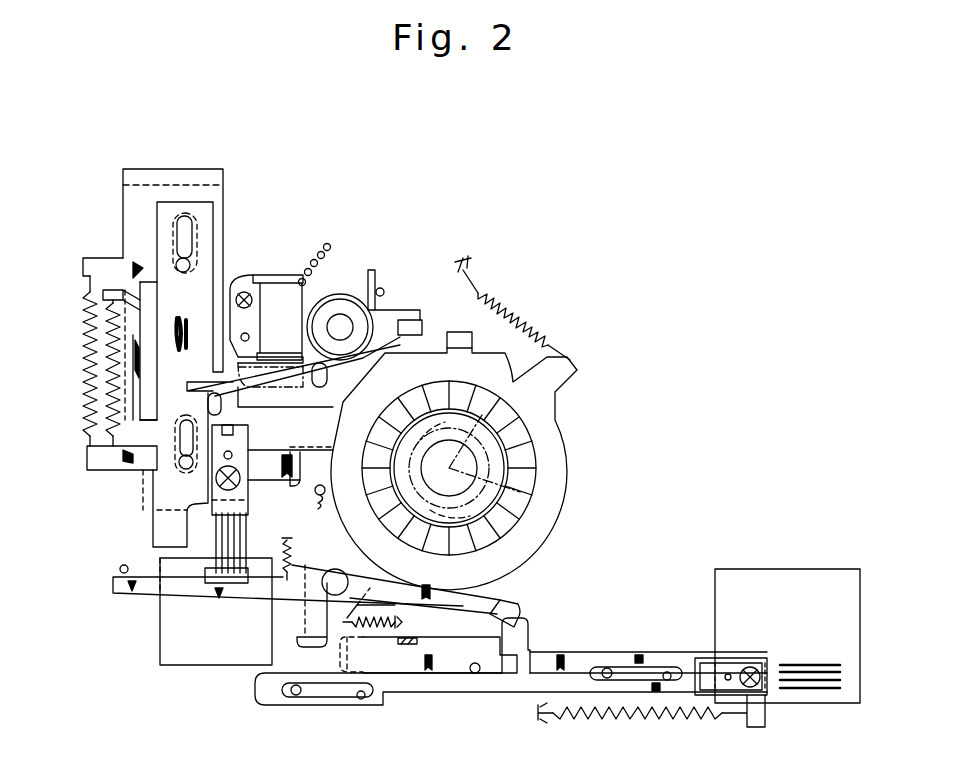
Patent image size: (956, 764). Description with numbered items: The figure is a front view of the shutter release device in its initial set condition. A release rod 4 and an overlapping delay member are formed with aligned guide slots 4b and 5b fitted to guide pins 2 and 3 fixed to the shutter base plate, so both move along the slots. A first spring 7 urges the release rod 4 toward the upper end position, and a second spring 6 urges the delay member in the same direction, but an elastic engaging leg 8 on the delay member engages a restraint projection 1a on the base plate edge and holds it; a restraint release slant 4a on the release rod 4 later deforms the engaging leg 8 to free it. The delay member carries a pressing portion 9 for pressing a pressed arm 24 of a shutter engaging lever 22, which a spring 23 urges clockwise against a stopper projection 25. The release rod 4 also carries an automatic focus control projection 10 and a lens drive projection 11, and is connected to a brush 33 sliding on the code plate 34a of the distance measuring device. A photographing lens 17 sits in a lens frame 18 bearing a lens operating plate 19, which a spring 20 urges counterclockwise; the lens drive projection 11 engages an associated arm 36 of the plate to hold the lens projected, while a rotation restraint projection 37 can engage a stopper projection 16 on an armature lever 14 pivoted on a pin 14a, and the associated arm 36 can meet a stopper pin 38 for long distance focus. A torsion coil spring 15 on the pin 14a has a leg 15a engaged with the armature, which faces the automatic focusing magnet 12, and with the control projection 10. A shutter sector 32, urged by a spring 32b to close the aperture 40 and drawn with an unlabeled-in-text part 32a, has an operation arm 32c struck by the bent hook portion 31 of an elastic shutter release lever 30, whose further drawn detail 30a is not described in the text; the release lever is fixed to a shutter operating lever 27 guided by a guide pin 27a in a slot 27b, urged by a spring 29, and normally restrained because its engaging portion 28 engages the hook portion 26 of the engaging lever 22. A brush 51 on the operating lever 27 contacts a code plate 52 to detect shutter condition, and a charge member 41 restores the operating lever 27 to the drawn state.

The restraint projection 1a is at (125, 398).
The guide pin 2 is at (190, 268).
The guide pin 3 is at (178, 465).
The release rod 4 is at (221, 190).
The restraint release slant 4a is at (98, 308).
The guide slot 4b is at (175, 212).
The guide slot 5b is at (185, 217).
The second spring 6 is at (108, 388).
The first spring 7 is at (85, 366).
The engaging leg 8 is at (125, 335).
The pressing portion 9 is at (153, 528).
The automatic focus control projection 10 is at (225, 410).
The lens drive projection 11 is at (292, 487).
The automatic focusing magnet 12 is at (272, 296).
The armature lever 14 is at (392, 316).
The pin 14a is at (346, 320).
The torsion coil spring 15 is at (335, 294).
The leg 15a is at (196, 380).
The stopper projection 16 is at (420, 328).
The photographing lens 17 is at (500, 440).
The lens frame 18 is at (525, 450).
The lens operating plate 19 is at (553, 464).
The spring 20 is at (520, 300).
The shutter engaging lever 22 is at (458, 588).
The spring 23 is at (288, 564).
The pressed arm 24 is at (142, 596).
The stopper projection 25 is at (119, 566).
The hook portion 26 is at (508, 612).
The shutter operating lever 27 is at (586, 656).
The guide pin 27a is at (296, 696).
The slot 27b is at (361, 700).
The engaging portion 28 is at (525, 630).
The spring 29 is at (702, 716).
The shutter release lever 30 is at (425, 690).
The pin 30a is at (474, 676).
The bent hook portion 31 is at (400, 628).
The shutter sector 32 is at (530, 490).
The cam pin 32a is at (320, 570).
The spring 32b is at (362, 608).
The operation arm 32c is at (306, 652).
The brush 33 is at (212, 585).
The code plate 34a is at (182, 657).
The associated arm 36 is at (288, 446).
The rotation restraint projection 37 is at (473, 334).
The stopper pin 38 is at (312, 509).
The aperture 40 is at (470, 480).
The charge member 41 is at (420, 641).
The brush 51 is at (815, 695).
The code plate 52 is at (800, 576).